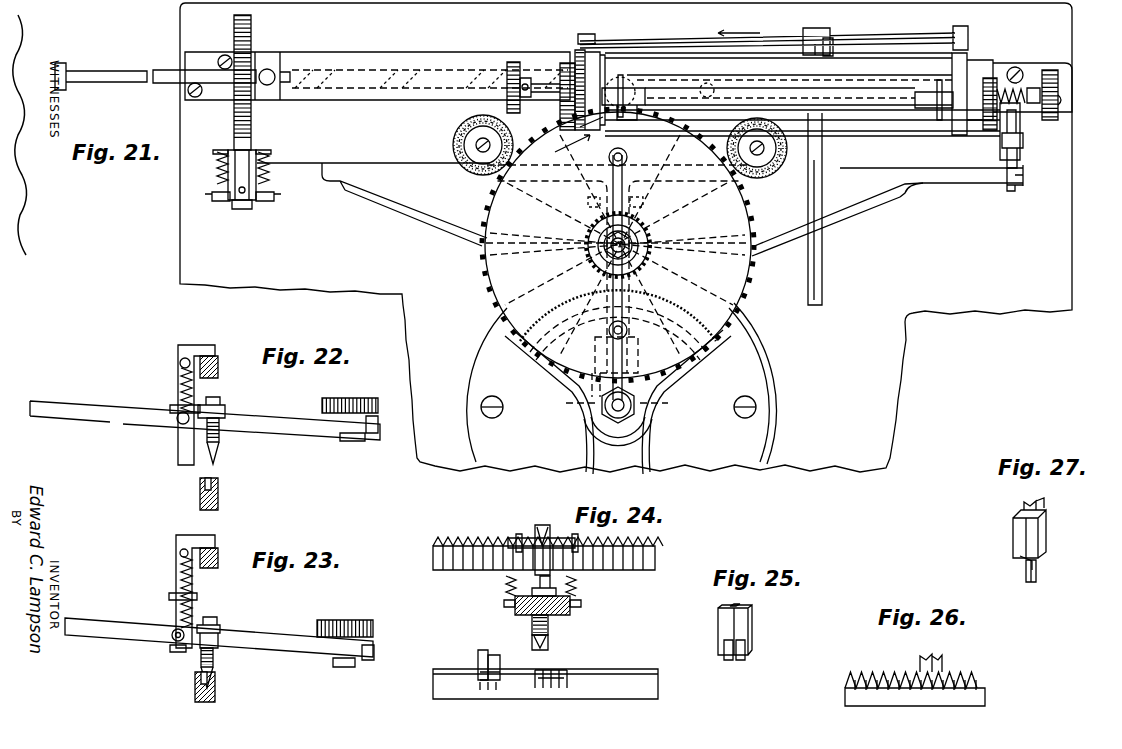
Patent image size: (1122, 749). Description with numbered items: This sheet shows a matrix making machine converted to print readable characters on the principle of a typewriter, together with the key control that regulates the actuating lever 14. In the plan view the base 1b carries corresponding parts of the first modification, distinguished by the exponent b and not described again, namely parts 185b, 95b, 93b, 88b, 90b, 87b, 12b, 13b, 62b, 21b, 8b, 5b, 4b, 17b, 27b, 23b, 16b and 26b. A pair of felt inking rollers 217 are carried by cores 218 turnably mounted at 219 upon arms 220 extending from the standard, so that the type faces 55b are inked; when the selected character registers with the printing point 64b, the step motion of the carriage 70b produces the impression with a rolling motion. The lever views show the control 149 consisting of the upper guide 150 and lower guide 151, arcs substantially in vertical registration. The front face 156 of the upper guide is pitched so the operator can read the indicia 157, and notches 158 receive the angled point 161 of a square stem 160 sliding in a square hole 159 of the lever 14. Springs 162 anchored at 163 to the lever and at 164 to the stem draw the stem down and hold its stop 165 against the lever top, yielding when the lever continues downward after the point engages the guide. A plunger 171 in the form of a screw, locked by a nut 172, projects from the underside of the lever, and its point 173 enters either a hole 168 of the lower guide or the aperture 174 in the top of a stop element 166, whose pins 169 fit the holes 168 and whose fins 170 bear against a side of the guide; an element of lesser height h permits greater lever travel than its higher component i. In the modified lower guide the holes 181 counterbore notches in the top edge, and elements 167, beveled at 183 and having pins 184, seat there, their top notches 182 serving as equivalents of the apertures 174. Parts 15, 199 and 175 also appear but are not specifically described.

In FIG. 21, the base 1b is at (180, 208).
In FIG. 21, the push rod 185b is at (131, 74).
In FIG. 21, the rail housing 95b is at (449, 67).
In FIG. 21, the vertical rack 93b is at (236, 36).
In FIG. 21, the spring 88b is at (216, 170).
In FIG. 21, the adjusting screw 90b is at (212, 194).
In FIG. 21, the slide block 87b is at (236, 208).
In FIG. 21, the carriage 70b is at (663, 39).
In FIG. 21, the type faces 55b is at (556, 136).
In FIG. 21, the printing point 64b is at (630, 120).
In FIG. 21, the cross bar 12b is at (975, 182).
In FIG. 21, the arm 13b is at (450, 222).
In FIG. 21, the inking rollers 217 is at (455, 151).
In FIG. 21, the mounting of cores 219 is at (478, 140).
In FIG. 21, the cores 218 is at (470, 152).
In FIG. 21, the arms 220 is at (532, 200).
In FIG. 21, the pinion gear 62b is at (590, 222).
In FIG. 21, the pivot pin 21b is at (609, 158).
In FIG. 21, the sector gear 8b is at (597, 352).
In FIG. 21, the slide block 5b is at (640, 372).
In FIG. 21, the base plate 4b is at (768, 443).
In FIG. 21, the yoke arm 17b is at (505, 335).
In FIG. 21, the pivot nut 27b is at (626, 409).
In FIG. 21, the bearing collar 23b is at (642, 433).
In FIG. 21, the slot 16b is at (600, 406).
In FIG. 22, the slot 16b is at (212, 487).
In FIG. 21, the pivot stud 26b is at (604, 410).
In FIG. 21, the actuating lever 14 is at (642, 466).
In FIG. 22, the actuating lever 14 is at (280, 420).
In FIG. 23, the actuating lever 14 is at (262, 640).
In FIG. 24, the actuating lever 14 is at (572, 610).
In FIG. 22, the knurled gear 15 is at (349, 399).
In FIG. 23, the knurled gear 15 is at (345, 620).
In FIG. 22, the angled point 161 is at (208, 346).
In FIG. 23, the angled point 161 is at (207, 538).
In FIG. 24, the angled point 161 is at (543, 526).
In FIG. 22, the upper guide 150 is at (218, 368).
In FIG. 23, the upper guide 150 is at (218, 562).
In FIG. 22, the front face 156 is at (222, 375).
In FIG. 24, the front face 156 is at (440, 570).
In FIG. 22, the spring anchorage on stem 164 is at (180, 362).
In FIG. 23, the spring anchorage on stem 164 is at (184, 553).
In FIG. 24, the spring anchorage on stem 164 is at (518, 538).
In FIG. 22, the springs 162 is at (180, 381).
In FIG. 23, the springs 162 is at (181, 575).
In FIG. 24, the springs 162 is at (507, 590).
In FIG. 22, the stop 165 is at (172, 405).
In FIG. 23, the stop 165 is at (171, 595).
In FIG. 22, the square hole 159 is at (170, 422).
In FIG. 23, the square hole 159 is at (170, 643).
In FIG. 22, the spring anchorage on lever 163 is at (175, 425).
In FIG. 24, the spring anchorage on lever 163 is at (512, 607).
In FIG. 22, the stem 160 is at (178, 448).
In FIG. 23, the stem 160 is at (178, 612).
In FIG. 22, the nut 172 is at (222, 410).
In FIG. 23, the nut 172 is at (208, 632).
In FIG. 24, the nut 172 is at (582, 603).
In FIG. 22, the plunger 171 is at (220, 436).
In FIG. 23, the plunger 171 is at (214, 658).
In FIG. 24, the plunger 171 is at (549, 620).
In FIG. 22, the point 173 is at (217, 455).
In FIG. 23, the point 173 is at (201, 675).
In FIG. 22, the lower guide 151 is at (219, 503).
In FIG. 23, the lower guide 151 is at (196, 698).
In FIG. 24, the lower guide 151 is at (436, 684).
In FIG. 26, the lower guide 151 is at (986, 694).
In FIG. 23, the holes 168 is at (201, 684).
In FIG. 24, the holes 168 is at (565, 670).
In FIG. 23, the control 149 is at (209, 600).
In FIG. 24, the notches 158 is at (472, 542).
In FIG. 24, the indicia 157 is at (623, 570).
In FIG. 24, the direction 199 is at (464, 613).
In FIG. 24, the point 175 is at (549, 640).
In FIG. 24, the aperture 174 is at (478, 650).
In FIG. 25, the aperture 174 is at (730, 606).
In FIG. 24, the stop element 166 is at (492, 655).
In FIG. 25, the stop element 166 is at (718, 621).
In FIG. 24, the higher stop element height i is at (478, 660).
In FIG. 24, the lesser stop element height h is at (500, 665).
In FIG. 24, the fins 170 is at (494, 683).
In FIG. 25, the fins 170 is at (746, 647).
In FIG. 25, the pins 169 is at (724, 647).
In FIG. 26, the top notches 182 is at (935, 660).
In FIG. 27, the top notches 182 is at (1040, 496).
In FIG. 26, the holes 181 is at (892, 680).
In FIG. 27, the stop element 167 is at (1015, 540).
In FIG. 27, the bevel 183 is at (1020, 560).
In FIG. 27, the pins 184 is at (1037, 574).